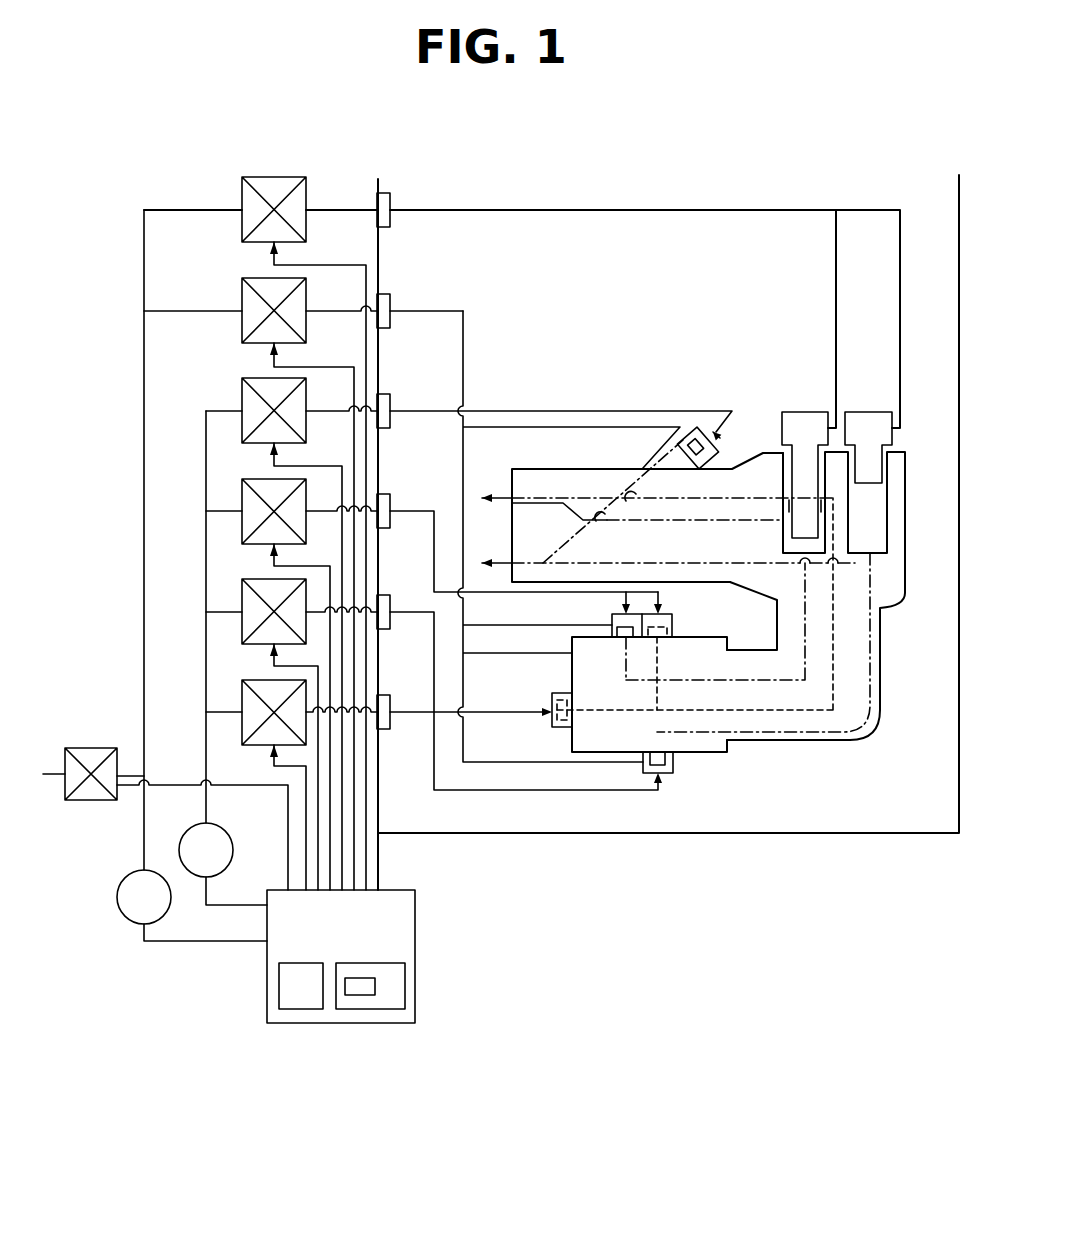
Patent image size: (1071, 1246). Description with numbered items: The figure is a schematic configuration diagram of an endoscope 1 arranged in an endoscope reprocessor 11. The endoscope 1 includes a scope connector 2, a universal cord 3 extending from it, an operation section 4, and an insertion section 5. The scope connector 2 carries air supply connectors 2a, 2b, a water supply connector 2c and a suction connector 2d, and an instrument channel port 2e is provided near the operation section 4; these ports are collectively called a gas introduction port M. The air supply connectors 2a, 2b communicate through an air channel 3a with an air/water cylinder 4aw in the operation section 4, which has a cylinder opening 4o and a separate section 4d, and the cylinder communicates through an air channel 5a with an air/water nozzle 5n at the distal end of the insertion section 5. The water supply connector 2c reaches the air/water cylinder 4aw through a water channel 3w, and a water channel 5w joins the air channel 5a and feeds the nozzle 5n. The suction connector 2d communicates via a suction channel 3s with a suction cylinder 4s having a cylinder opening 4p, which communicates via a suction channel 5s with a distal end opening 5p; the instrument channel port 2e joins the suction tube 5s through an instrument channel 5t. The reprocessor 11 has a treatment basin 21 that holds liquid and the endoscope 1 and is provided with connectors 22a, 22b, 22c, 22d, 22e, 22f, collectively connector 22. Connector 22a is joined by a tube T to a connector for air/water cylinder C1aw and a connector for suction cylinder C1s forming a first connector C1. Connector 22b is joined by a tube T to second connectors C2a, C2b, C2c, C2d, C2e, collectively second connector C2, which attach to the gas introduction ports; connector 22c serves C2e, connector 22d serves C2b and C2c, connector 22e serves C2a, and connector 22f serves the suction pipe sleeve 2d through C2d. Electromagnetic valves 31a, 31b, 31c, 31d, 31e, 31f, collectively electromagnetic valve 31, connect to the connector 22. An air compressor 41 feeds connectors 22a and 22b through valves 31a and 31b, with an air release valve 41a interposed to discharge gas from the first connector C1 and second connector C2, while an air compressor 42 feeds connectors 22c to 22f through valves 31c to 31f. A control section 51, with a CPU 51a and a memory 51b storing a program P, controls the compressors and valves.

The endoscope 1 is at (624, 380).
The scope connector 2 is at (572, 650).
The air supply connector 2a is at (558, 729).
The air supply connector 2b is at (676, 640).
The water supply connector 2c is at (610, 637).
The suction connector 2d is at (673, 758).
The instrument channel port 2e is at (718, 440).
The universal cord 3 is at (884, 660).
The air channel 3a is at (833, 694).
The suction channel 3s is at (885, 695).
The water channel 3w is at (804, 669).
The operation section 4 is at (908, 557).
The air/water cylinder 4aw is at (784, 533).
The separate section 4d is at (790, 508).
The cylinder opening 4o is at (780, 457).
The cylinder opening 4p is at (900, 454).
The suction cylinder 4s is at (888, 533).
The insertion section 5 is at (593, 468).
The air channel 5a is at (600, 497).
The air/water nozzle 5n is at (506, 492).
The distal end opening 5p is at (506, 555).
The suction channel 5s is at (717, 564).
The instrument channel 5t is at (650, 495).
The water channel 5w is at (640, 526).
The endoscope reprocessor 11 is at (624, 1007).
The treatment basin 21 is at (800, 259).
The connector 22 is at (404, 188).
The connector 22a is at (390, 222).
The connector 22b is at (390, 323).
The connector 22c is at (390, 423).
The connector 22d is at (390, 523).
The connector 22e is at (390, 624).
The connector 22f is at (390, 724).
The electromagnetic valve 31 is at (320, 182).
The electromagnetic valve 31a is at (242, 230).
The electromagnetic valve 31b is at (242, 331).
The electromagnetic valve 31c is at (242, 431).
The electromagnetic valve 31d is at (242, 531).
The electromagnetic valve 31e is at (242, 631).
The electromagnetic valve 31f is at (242, 732).
The air compressor 41 is at (166, 910).
The air release valve 41a is at (78, 748).
The air compressor 42 is at (228, 865).
The control section 51 is at (415, 915).
The CPU 51a is at (303, 1010).
The memory 51b is at (368, 1010).
The first connector C1 is at (811, 349).
The connector for air/water cylinder C1aw is at (797, 410).
The connector for suction cylinder C1s is at (860, 410).
The second connector C2 is at (703, 839).
The second connector C2a is at (552, 697).
The second connector C2b is at (674, 622).
The second connector C2c is at (612, 620).
The second connector C2d is at (667, 775).
The second connector C2e is at (692, 428).
The gas introduction port M is at (714, 794).
The program P is at (375, 987).
The tube T is at (457, 209).